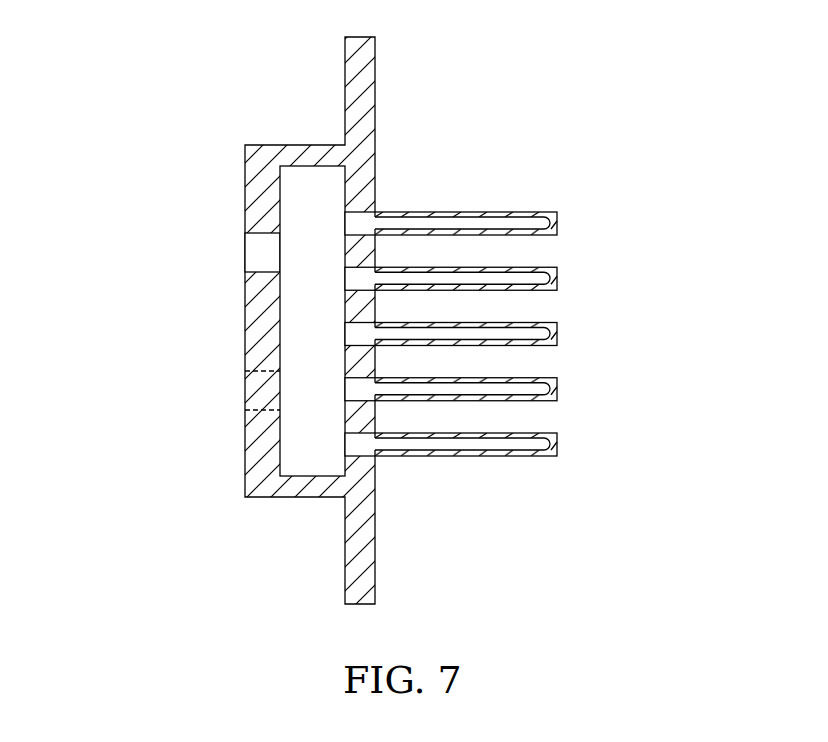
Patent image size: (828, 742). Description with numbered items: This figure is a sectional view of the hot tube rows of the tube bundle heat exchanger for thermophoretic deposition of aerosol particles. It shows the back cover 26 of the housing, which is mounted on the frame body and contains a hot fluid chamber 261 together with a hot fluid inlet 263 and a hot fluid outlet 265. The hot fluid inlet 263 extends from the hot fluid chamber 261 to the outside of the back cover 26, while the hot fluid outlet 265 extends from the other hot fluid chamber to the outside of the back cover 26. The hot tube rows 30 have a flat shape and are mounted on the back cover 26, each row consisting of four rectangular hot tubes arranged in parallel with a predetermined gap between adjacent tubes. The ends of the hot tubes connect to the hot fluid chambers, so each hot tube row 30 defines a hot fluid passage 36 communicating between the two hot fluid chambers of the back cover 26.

The back cover 26 is at (373, 318).
The hot tube row 30 is at (502, 273).
The hot fluid passage 36 is at (546, 324).
The hot fluid chamber 261 is at (308, 309).
The hot fluid inlet 263 is at (245, 233).
The hot fluid outlet 265 is at (261, 412).